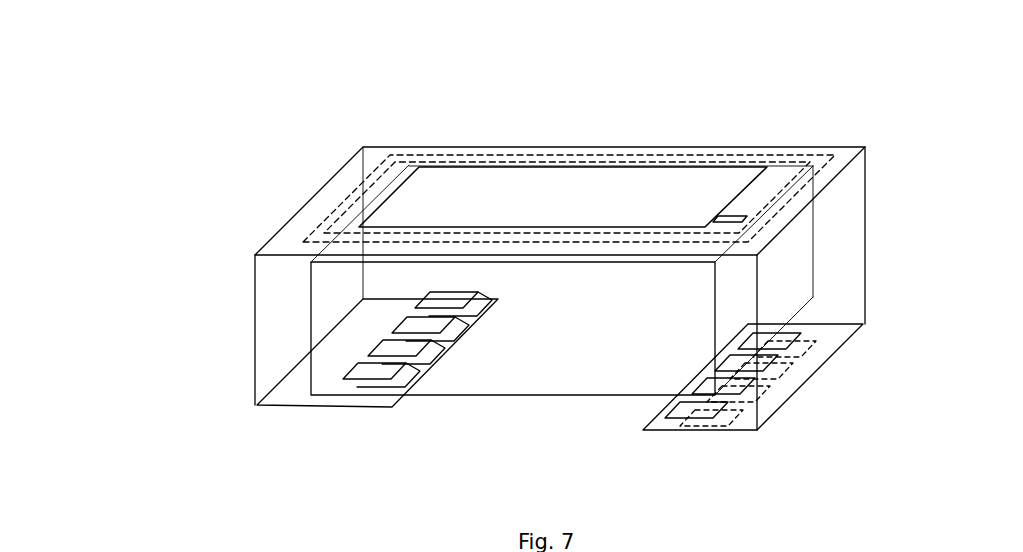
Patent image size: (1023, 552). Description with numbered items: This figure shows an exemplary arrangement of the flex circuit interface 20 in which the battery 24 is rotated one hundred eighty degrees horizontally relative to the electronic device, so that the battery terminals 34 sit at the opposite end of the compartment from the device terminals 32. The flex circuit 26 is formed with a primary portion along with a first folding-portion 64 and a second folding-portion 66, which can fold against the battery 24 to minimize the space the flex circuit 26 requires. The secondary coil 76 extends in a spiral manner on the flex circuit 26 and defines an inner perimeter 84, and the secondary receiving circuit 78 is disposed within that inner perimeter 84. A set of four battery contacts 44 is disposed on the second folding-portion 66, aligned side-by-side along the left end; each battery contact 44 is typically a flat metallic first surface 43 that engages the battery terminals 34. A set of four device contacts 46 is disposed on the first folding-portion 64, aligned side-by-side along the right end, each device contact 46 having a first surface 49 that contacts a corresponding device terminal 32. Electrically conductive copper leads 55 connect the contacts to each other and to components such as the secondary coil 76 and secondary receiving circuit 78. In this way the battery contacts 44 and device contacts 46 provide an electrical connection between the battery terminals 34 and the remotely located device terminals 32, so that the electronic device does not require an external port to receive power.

The flex circuit interface 20 is at (906, 110).
The battery 24 is at (506, 395).
The flex circuit 26 is at (663, 147).
The device terminals 32 is at (797, 352).
The battery terminals 34 is at (473, 295).
The first surface 43 is at (367, 387).
The battery contacts 44 is at (420, 314).
The device contacts 46 is at (725, 405).
The first surface 49 is at (698, 412).
The copper leads 55 is at (722, 216).
The first folding-portion 64 is at (866, 265).
The second folding-portion 66 is at (255, 310).
The secondary coil 76 is at (373, 188).
The secondary receiving circuit 78 is at (540, 162).
The inner perimeter 84 is at (783, 174).